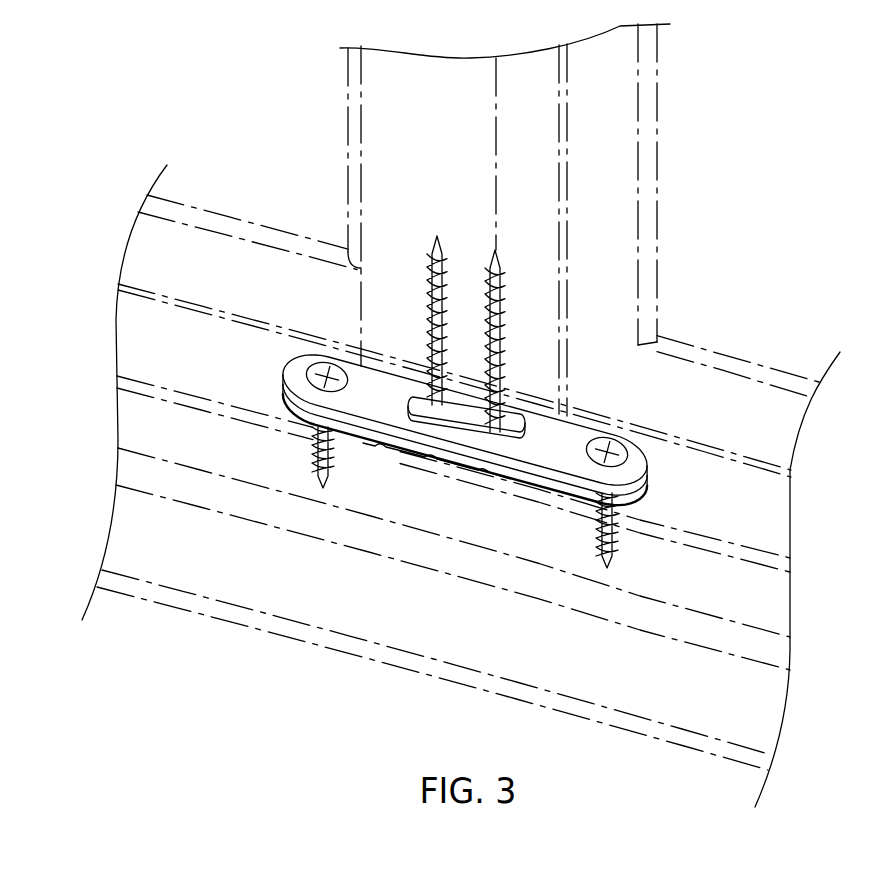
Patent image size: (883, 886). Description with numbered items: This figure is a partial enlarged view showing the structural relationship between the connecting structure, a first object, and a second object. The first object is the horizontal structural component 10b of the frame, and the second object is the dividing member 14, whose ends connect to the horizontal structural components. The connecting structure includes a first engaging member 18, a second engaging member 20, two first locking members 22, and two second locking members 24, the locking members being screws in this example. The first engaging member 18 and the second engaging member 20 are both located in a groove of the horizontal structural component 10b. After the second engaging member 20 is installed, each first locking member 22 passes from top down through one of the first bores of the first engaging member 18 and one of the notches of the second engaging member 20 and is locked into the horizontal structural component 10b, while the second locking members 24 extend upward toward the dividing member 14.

The horizontal structural component 10b is at (167, 605).
The dividing member 14 is at (657, 180).
The first engaging member 18 is at (573, 438).
The second engaging member 20 is at (520, 473).
The first locking member 22 is at (618, 496).
The second locking member 24 is at (427, 273).